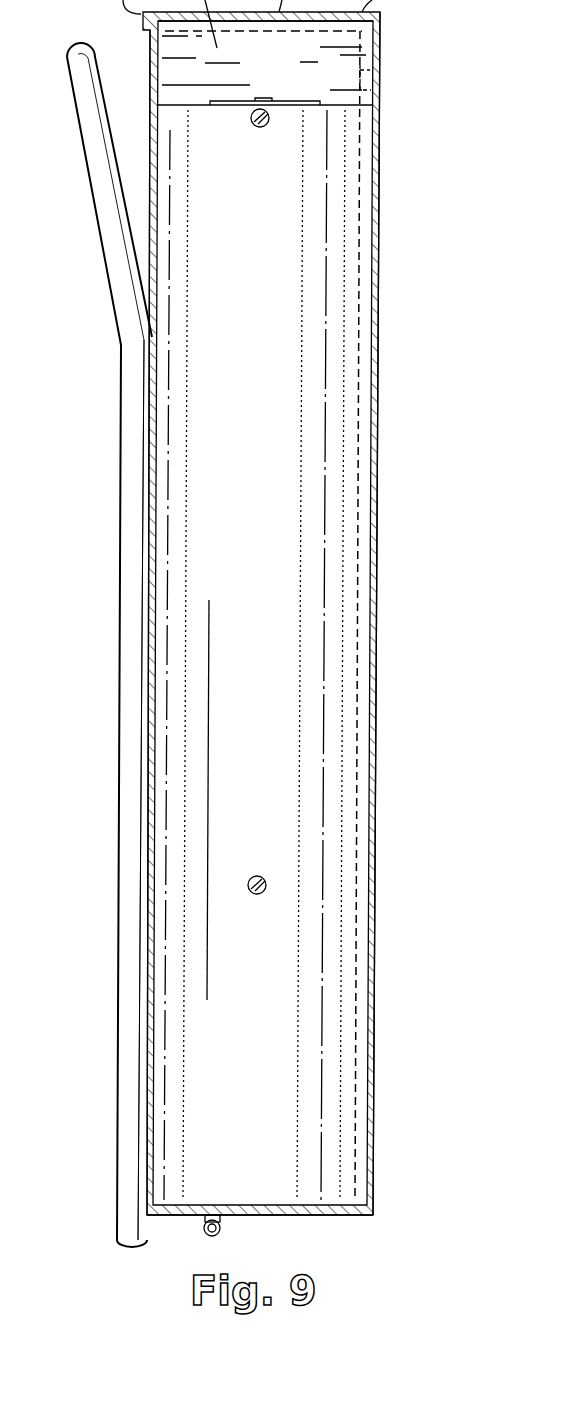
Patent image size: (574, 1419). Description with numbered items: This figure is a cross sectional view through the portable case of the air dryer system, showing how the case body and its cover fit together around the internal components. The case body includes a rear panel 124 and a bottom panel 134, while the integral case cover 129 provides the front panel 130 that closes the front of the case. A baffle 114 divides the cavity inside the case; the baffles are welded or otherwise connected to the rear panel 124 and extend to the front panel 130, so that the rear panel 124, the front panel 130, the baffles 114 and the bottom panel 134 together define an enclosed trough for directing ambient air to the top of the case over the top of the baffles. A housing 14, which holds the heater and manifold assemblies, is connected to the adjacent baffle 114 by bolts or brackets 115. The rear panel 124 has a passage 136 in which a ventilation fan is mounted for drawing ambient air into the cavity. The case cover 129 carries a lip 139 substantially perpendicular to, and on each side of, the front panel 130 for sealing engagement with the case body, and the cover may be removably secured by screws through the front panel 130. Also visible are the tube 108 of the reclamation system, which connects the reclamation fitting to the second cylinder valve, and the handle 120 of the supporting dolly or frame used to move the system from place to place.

The housing 14 is at (284, 98).
The tube 108 is at (208, 1237).
The baffle 114 is at (283, 444).
The bolt or bracket 115 is at (260, 128).
The handle 120 is at (80, 133).
The rear panel 124 is at (150, 78).
The case cover 129 is at (407, 143).
The front panel 130 is at (378, 268).
The bottom panel 134 is at (305, 1215).
The passage 136 is at (147, 1105).
The lip 139 is at (378, 82).